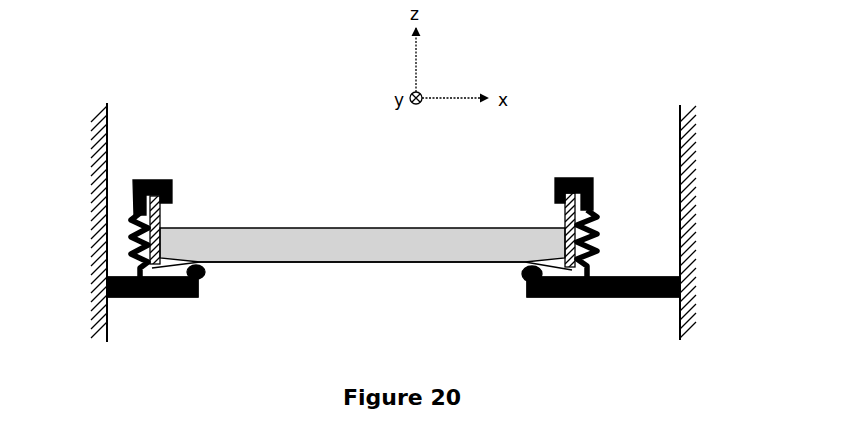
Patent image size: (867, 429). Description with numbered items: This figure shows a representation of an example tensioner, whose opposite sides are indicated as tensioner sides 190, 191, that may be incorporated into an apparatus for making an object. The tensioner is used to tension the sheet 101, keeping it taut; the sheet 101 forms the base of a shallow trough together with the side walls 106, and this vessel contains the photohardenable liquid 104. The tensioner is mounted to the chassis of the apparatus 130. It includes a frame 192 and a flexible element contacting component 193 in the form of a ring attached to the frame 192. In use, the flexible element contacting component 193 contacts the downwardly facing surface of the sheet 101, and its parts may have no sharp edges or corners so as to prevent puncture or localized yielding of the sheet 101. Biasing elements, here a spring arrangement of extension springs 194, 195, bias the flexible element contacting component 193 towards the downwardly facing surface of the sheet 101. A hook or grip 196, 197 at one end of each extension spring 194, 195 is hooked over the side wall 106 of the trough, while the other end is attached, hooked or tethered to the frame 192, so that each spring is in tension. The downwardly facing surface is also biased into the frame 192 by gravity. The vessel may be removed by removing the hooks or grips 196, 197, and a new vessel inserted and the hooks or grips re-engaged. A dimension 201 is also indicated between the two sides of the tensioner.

The chassis of the apparatus 130 is at (105, 111).
The photohardenable liquid 104 is at (372, 245).
The sheet 101 is at (299, 270).
The tensioner side 190 is at (136, 301).
The frame 192 is at (170, 297).
The flexible element contacting component 193 is at (203, 280).
The extension spring 194 is at (138, 238).
The extension spring 195 is at (592, 250).
The hook or grip 196 is at (160, 180).
The hook or grip 197 is at (575, 178).
The side wall 106 is at (160, 224).
The tensioner side 191 is at (612, 211).
The lateral clearance / width 201 is at (514, 294).